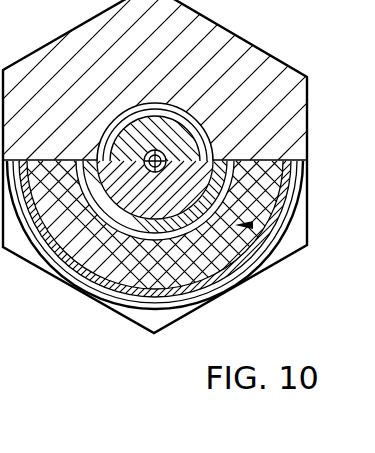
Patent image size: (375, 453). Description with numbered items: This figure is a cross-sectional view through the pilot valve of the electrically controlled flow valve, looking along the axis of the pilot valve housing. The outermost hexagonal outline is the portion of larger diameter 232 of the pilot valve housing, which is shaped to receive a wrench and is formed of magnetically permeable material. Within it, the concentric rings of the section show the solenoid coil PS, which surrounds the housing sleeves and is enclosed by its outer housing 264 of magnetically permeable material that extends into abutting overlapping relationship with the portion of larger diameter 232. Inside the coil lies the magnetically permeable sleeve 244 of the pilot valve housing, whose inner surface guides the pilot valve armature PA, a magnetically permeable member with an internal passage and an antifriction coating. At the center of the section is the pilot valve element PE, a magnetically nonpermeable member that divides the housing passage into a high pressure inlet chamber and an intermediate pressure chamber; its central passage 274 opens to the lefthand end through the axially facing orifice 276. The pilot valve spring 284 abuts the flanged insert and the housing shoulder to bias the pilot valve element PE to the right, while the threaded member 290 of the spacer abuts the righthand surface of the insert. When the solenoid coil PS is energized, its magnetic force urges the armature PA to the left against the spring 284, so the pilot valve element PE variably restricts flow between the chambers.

The portion of larger diameter 232 is at (253, 46).
The axially facing orifice 276 is at (158, 140).
The central passage 274 is at (166, 130).
The pilot valve element PE is at (102, 132).
The pilot valve spring 284 is at (96, 148).
The threaded member 290 is at (157, 173).
The pilot valve armature PA is at (200, 174).
The sleeve 244 is at (207, 200).
The solenoid coil PS is at (250, 226).
The outer housing 264 is at (218, 283).